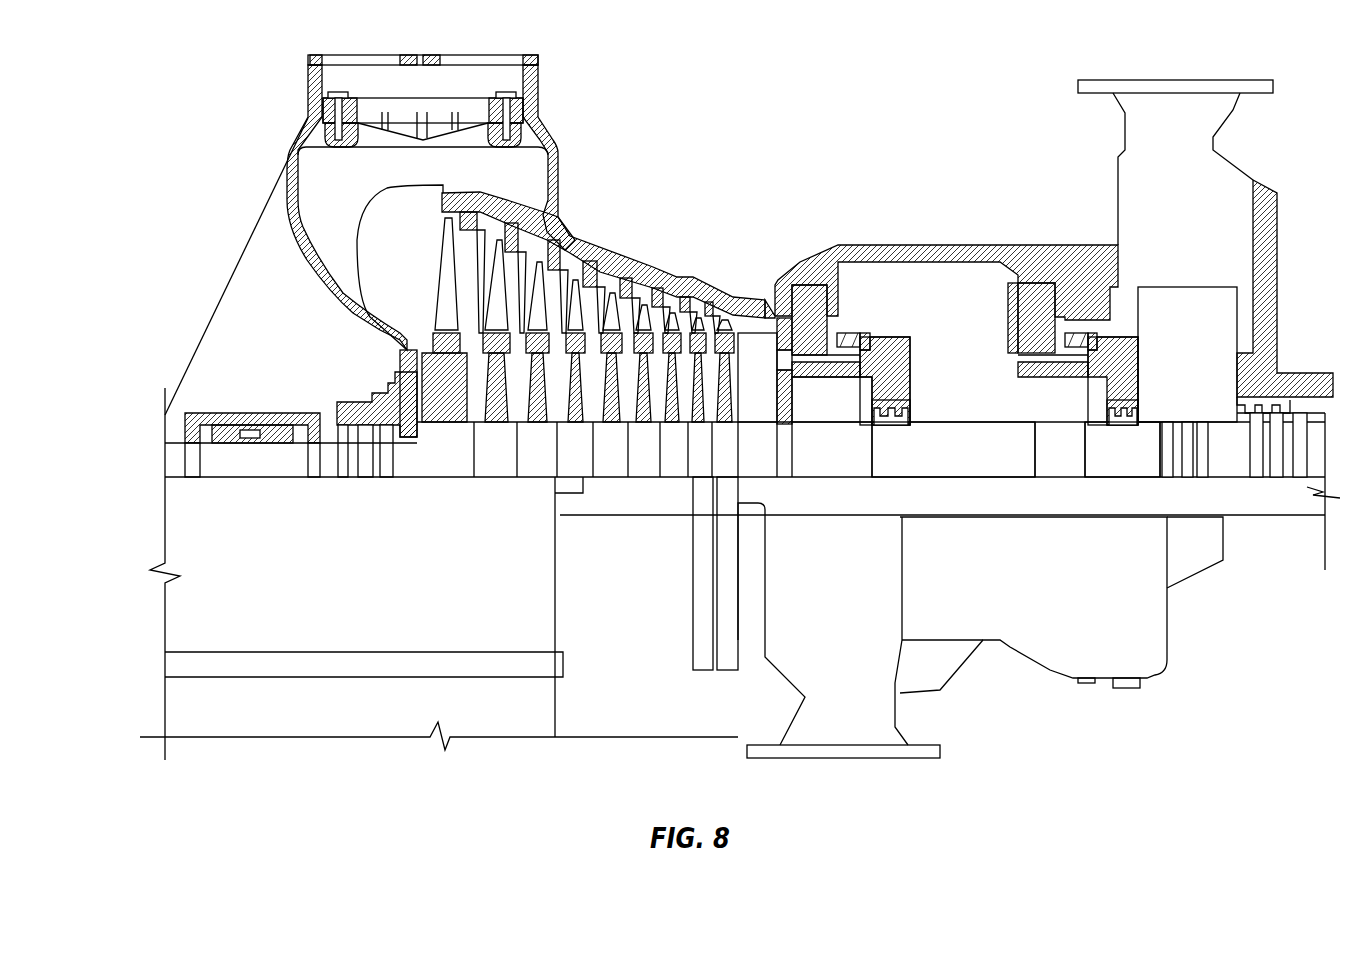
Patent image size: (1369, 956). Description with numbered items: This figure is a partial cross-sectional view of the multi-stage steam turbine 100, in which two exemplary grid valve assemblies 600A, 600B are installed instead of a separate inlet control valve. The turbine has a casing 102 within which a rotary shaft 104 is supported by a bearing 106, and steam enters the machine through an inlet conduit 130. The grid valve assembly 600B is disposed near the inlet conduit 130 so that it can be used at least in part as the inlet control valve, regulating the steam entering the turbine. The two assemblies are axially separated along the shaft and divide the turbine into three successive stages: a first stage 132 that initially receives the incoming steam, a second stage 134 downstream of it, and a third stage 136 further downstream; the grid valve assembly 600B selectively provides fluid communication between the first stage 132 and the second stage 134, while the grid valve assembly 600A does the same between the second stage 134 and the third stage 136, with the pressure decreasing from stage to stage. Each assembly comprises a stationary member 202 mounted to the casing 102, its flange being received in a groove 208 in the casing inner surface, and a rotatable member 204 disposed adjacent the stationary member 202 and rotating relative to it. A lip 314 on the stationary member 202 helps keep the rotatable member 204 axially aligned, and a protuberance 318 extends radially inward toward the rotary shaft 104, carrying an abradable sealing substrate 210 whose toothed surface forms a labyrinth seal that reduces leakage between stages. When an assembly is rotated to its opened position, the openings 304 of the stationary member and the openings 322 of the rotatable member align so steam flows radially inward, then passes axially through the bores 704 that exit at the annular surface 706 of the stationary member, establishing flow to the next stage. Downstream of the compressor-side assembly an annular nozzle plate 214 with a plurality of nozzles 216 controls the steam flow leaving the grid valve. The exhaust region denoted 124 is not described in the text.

The multi-stage steam turbine 100 is at (740, 402).
The casing 102 is at (603, 243).
The rotary shaft 104 is at (871, 445).
The bearing 106 is at (222, 427).
The exhaust section 124 is at (888, 698).
The inlet conduit 130 is at (1213, 118).
The first stage 132 is at (1269, 296).
The second stage 134 is at (1118, 354).
The third stage 136 is at (785, 400).
The stationary member 202 is at (801, 278).
The rotatable member 204 is at (862, 332).
The groove 208 is at (818, 272).
The sealing substrate 210 is at (910, 417).
The annular nozzle plate 214 is at (767, 343).
The nozzles 216 is at (793, 360).
The openings 304 is at (862, 353).
The lip 314 is at (900, 339).
The protuberance 318 is at (910, 385).
The openings 322 is at (852, 333).
The grid valve assembly 600A is at (922, 353).
The grid valve assembly 600B is at (1150, 353).
The bores 704 is at (822, 374).
The annular surface 706 is at (778, 338).